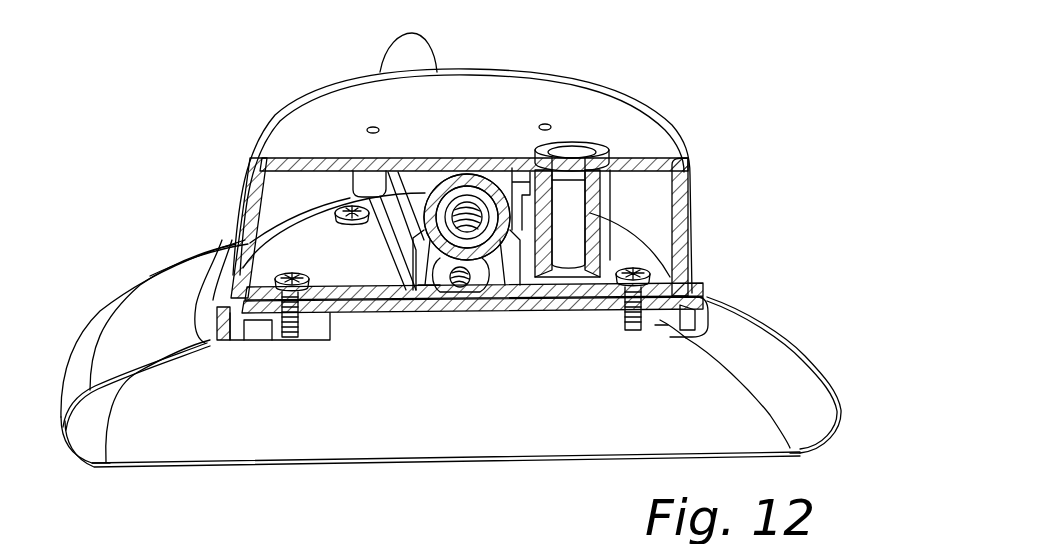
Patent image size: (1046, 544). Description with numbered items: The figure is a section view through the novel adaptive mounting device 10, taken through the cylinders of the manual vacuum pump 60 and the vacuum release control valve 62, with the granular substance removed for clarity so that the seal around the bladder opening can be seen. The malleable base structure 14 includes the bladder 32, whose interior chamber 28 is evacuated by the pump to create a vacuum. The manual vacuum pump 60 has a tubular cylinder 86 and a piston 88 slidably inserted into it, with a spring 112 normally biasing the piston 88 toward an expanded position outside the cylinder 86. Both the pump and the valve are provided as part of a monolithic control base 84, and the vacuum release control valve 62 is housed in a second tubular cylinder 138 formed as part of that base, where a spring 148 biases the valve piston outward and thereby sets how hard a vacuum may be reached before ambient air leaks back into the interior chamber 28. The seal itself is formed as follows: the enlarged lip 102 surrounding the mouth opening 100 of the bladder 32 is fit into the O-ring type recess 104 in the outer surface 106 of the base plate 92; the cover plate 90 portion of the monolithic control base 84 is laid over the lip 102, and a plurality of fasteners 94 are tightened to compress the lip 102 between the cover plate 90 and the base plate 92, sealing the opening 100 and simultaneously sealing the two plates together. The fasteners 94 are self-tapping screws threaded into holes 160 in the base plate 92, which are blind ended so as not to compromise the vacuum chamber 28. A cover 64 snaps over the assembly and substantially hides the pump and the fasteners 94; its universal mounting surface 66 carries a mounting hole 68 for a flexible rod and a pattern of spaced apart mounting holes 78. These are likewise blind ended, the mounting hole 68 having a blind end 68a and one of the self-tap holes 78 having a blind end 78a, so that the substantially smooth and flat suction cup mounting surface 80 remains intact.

The adaptive mounting device 10 is at (177, 103).
The malleable base structure 14 is at (793, 348).
The interior chamber 28 is at (808, 432).
The bladder 32 is at (97, 462).
The manual vacuum pump 60 is at (395, 55).
The vacuum release control valve 62 is at (428, 288).
The cover 64 is at (246, 233).
The universal mounting surface 66 is at (617, 147).
The mounting hole 68 is at (544, 150).
The blind end 68a is at (554, 180).
The mounting holes 78 is at (368, 127).
The blind end 78a is at (367, 195).
The suction cup mounting surface 80 is at (439, 151).
The monolithic control base 84 is at (266, 160).
The tubular cylinder 86 is at (412, 187).
The piston 88 is at (473, 187).
The cover plate 90 is at (667, 283).
The base plate 92 is at (703, 305).
The fasteners 94 is at (343, 205).
The mouth opening 100 is at (627, 328).
The enlarged lip 102 is at (675, 335).
The O-ring type recess 104 is at (672, 325).
The outer surface 106 is at (682, 300).
The spring 112 is at (423, 280).
The second tubular cylinder 138 is at (473, 292).
The spring 148 is at (457, 287).
The holes 160 is at (288, 337).